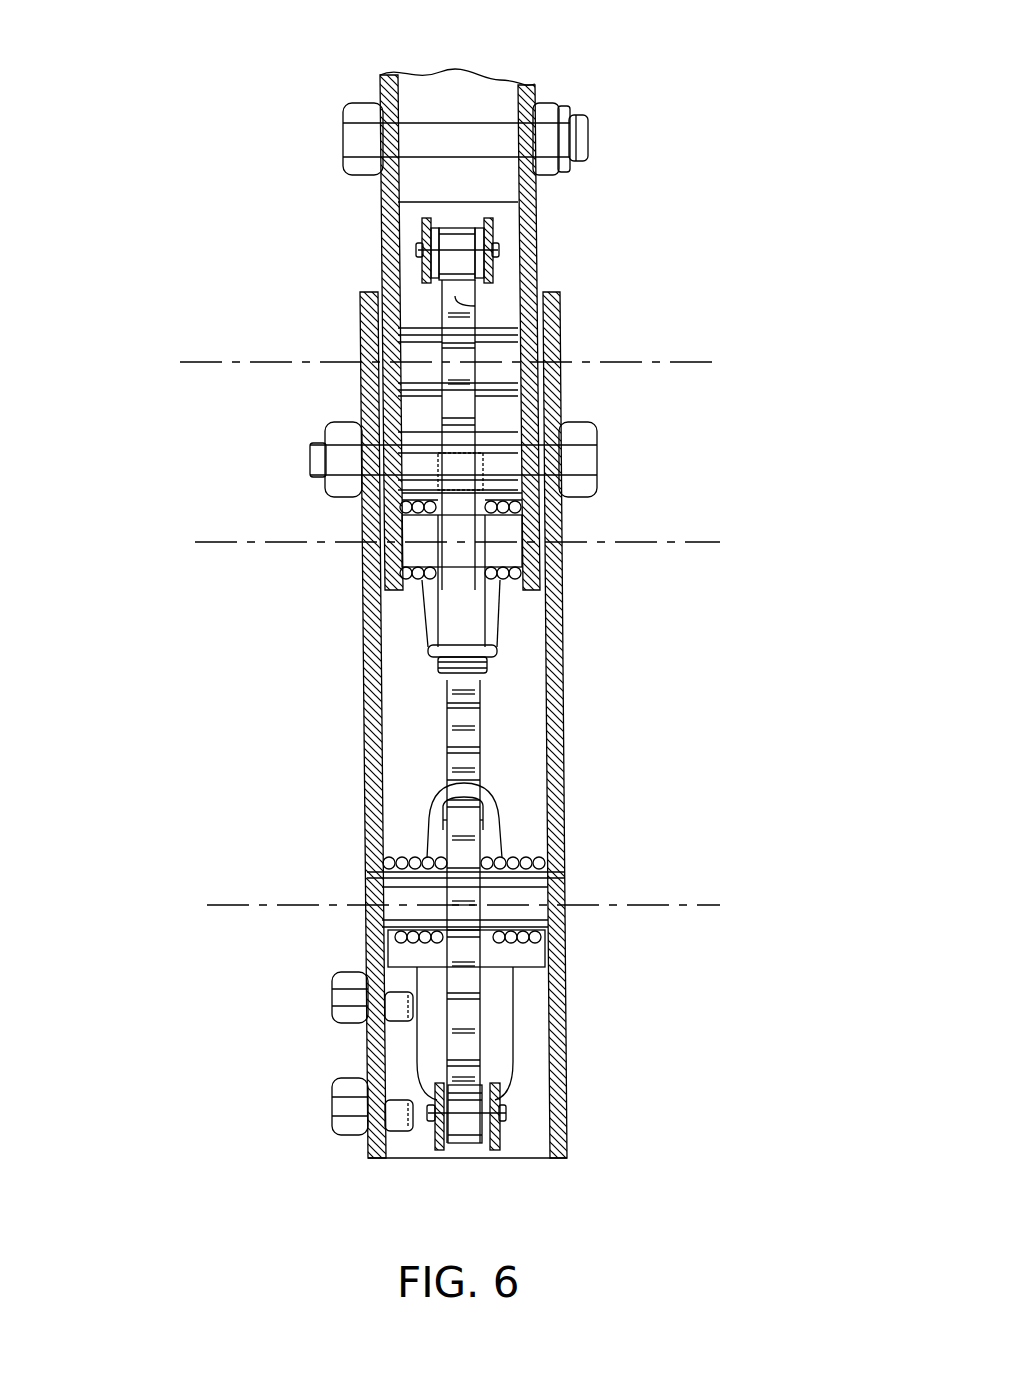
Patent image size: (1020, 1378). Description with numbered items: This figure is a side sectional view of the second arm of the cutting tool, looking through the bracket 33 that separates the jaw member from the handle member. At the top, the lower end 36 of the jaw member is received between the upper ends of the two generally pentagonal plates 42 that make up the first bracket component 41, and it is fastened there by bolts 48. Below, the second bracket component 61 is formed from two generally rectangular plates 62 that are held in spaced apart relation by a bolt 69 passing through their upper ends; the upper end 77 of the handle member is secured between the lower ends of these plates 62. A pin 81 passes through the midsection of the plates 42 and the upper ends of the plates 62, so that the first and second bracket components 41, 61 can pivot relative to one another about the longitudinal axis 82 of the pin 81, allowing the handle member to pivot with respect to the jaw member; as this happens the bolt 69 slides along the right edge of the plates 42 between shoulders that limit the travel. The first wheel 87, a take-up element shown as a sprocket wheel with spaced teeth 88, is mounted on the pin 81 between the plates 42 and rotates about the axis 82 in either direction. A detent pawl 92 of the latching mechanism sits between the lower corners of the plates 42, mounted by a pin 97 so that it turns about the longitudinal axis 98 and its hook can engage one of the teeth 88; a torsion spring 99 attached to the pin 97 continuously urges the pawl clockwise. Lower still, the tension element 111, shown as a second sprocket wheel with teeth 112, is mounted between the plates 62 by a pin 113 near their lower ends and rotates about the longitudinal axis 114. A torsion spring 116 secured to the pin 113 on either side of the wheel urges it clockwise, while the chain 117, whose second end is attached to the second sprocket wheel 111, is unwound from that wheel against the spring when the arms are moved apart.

The bracket 33 is at (240, 450).
The lower end 36 is at (480, 95).
The first bracket component 41 is at (310, 200).
The plates 42 is at (382, 90).
The bolts 48 is at (582, 128).
The second bracket component 61 is at (330, 730).
The plates 62 is at (568, 1150).
The bolt 69 is at (583, 458).
The upper end 77 is at (517, 1152).
The pin 81 is at (407, 337).
The longitudinal axis 82 is at (232, 357).
The first wheel 87 is at (530, 323).
The teeth 88 is at (470, 300).
The detent pawl 92 is at (467, 622).
The pin 97 is at (508, 528).
The longitudinal axis 98 is at (258, 541).
The torsion spring 99 is at (428, 598).
The tension element 111 is at (482, 1020).
The teeth 112 is at (470, 1052).
The pin 113 is at (532, 886).
The longitudinal axis 114 is at (250, 906).
The torsion spring 116 is at (433, 833).
The chain 117 is at (490, 235).